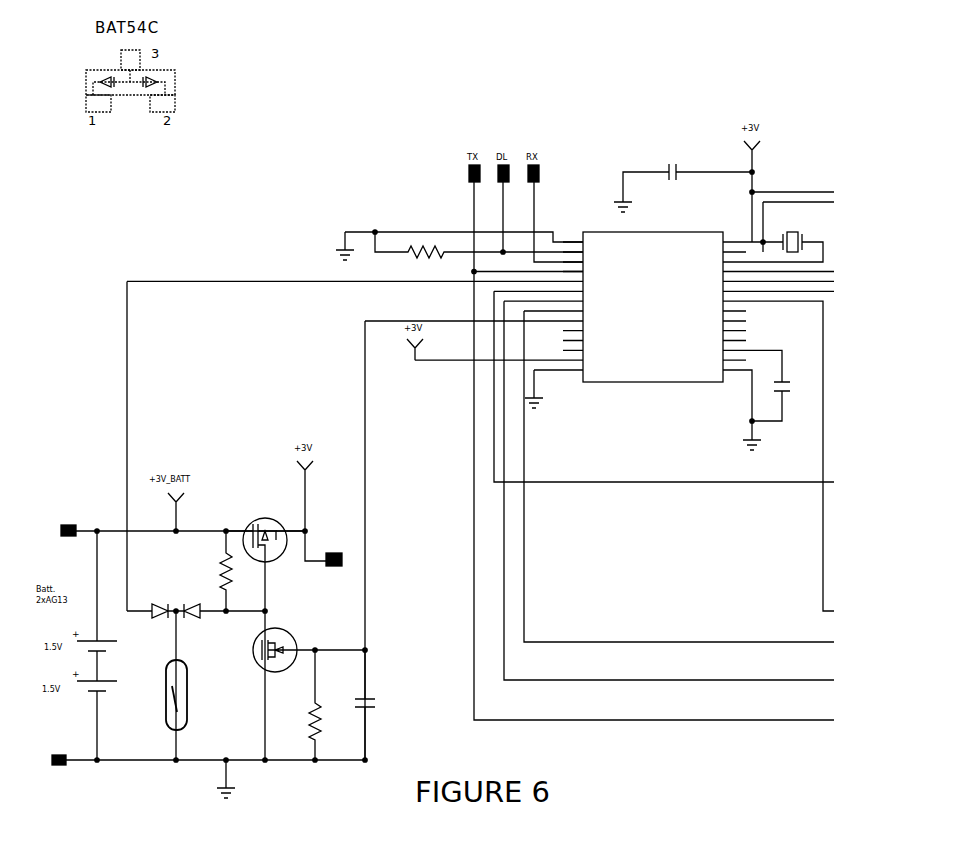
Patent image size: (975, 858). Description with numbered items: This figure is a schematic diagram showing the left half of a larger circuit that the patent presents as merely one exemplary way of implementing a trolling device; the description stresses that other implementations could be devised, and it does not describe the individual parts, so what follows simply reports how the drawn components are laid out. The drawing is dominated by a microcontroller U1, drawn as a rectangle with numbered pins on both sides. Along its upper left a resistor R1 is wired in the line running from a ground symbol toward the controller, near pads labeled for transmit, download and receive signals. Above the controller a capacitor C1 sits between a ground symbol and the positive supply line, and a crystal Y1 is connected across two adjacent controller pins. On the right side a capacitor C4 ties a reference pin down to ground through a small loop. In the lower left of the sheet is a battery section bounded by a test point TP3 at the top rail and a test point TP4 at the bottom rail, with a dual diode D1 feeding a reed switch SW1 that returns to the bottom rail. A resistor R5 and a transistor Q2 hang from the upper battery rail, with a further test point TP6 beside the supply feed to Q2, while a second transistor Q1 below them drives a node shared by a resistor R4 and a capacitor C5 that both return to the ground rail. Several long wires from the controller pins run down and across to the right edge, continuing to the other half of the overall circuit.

The ADuC814 microcontroller U1 is at (654, 312).
The 1k resistor R1 is at (479, 245).
The 0.1uF decoupling capacitor C1 is at (683, 176).
The 32.768 kHz crystal Y1 is at (784, 235).
The 0.1uF CREF capacitor C4 is at (776, 400).
The test point 3 TP3 is at (53, 531).
The test point 4 TP4 is at (45, 761).
The test point 6 TP6 is at (323, 548).
The BAT54C dual Schottky diode D1 is at (196, 616).
The reed switch SW1 is at (162, 685).
The 470k resistor R5 is at (213, 571).
The 470k resistor R4 is at (300, 705).
The ZXM61P02 P-channel MOSFET Q2 is at (265, 551).
The ZXM61N02 N-channel MOSFET Q1 is at (288, 685).
The 0.1uF capacitor C5 is at (374, 705).